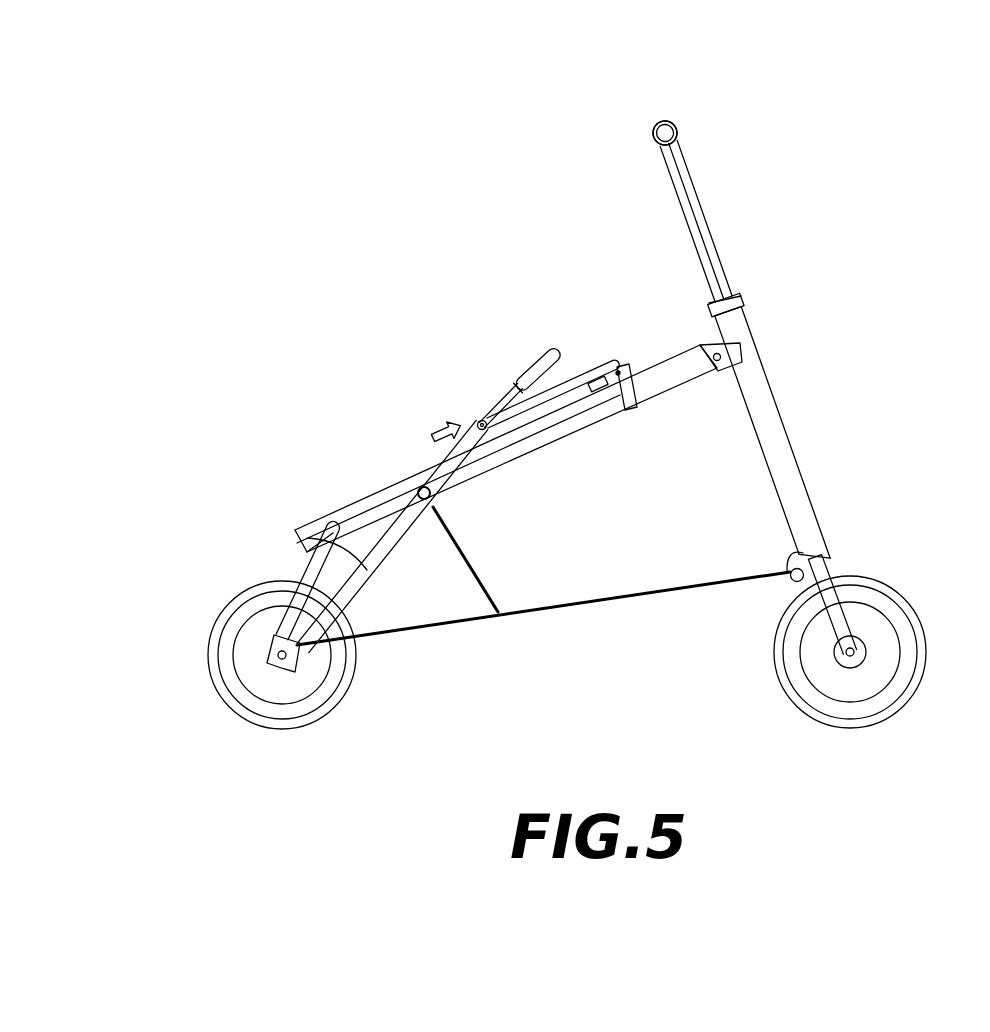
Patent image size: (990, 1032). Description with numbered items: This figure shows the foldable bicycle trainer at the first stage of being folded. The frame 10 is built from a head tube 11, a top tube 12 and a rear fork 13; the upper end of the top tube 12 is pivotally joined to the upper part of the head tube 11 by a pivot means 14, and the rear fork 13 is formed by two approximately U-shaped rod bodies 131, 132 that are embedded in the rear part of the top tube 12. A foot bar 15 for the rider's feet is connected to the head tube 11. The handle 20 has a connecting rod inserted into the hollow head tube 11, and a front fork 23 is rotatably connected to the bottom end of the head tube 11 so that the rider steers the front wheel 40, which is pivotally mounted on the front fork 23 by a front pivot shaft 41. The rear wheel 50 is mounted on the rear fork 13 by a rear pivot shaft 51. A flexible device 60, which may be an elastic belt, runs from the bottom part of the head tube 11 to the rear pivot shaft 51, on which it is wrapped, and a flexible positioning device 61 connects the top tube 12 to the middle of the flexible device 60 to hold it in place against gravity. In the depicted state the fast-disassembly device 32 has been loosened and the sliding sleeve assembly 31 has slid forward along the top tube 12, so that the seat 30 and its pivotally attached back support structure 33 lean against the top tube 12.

The frame 10 is at (783, 389).
The head tube 11 is at (758, 425).
The top tube 12 is at (498, 465).
The rear fork 13 is at (374, 605).
The rod body 131 is at (297, 530).
The rod body 132 is at (308, 578).
The pivot means 14 is at (716, 361).
The foot bar 15 is at (790, 577).
The handle 20 is at (633, 128).
The front fork 23 is at (818, 580).
The seat 30 is at (608, 355).
The sliding sleeve assembly 31 is at (633, 410).
The fast-disassembly device 32 is at (598, 380).
The back support structure 33 is at (533, 375).
The front wheel 40 is at (912, 680).
The front pivot shaft 41 is at (847, 660).
The rear wheel 50 is at (227, 700).
The rear pivot shaft 51 is at (290, 665).
The flexible device 60 is at (540, 613).
The positioning device 61 is at (480, 577).